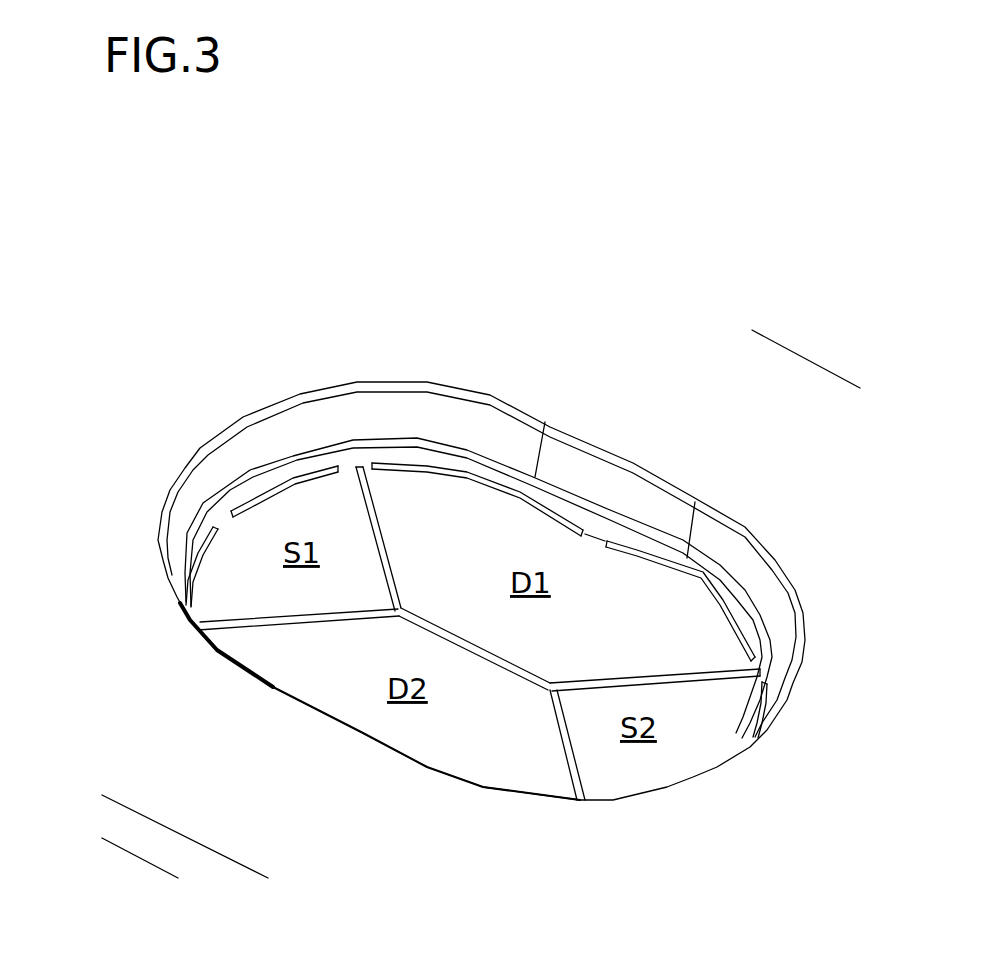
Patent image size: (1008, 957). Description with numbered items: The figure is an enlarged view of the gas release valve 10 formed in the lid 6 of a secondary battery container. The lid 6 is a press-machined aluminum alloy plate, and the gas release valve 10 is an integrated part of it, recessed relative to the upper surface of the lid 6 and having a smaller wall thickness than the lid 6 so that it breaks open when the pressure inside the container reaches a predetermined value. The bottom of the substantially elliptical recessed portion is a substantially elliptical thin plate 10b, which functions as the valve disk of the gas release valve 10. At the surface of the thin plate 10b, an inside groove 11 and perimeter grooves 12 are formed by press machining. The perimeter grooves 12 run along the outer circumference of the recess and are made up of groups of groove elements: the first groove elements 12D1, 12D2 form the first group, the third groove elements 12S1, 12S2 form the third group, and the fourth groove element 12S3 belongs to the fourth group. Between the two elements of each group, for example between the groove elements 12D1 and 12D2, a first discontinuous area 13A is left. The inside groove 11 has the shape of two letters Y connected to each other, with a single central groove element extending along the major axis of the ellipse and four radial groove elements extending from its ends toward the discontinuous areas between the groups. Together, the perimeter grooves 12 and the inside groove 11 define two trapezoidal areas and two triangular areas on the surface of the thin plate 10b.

The lid 6 is at (479, 634).
The gas release valve 10 is at (481, 604).
The thin plate 10b is at (372, 701).
The inside groove 11 is at (479, 675).
The perimeter grooves 12 is at (501, 580).
The third groove element 12S1 is at (129, 539).
The third groove element 12S2 is at (294, 417).
The first groove element 12D1 is at (477, 430).
The first groove element 12D2 is at (681, 544).
The fourth groove element 12S3 is at (828, 725).
The first discontinuous area 13A is at (613, 460).